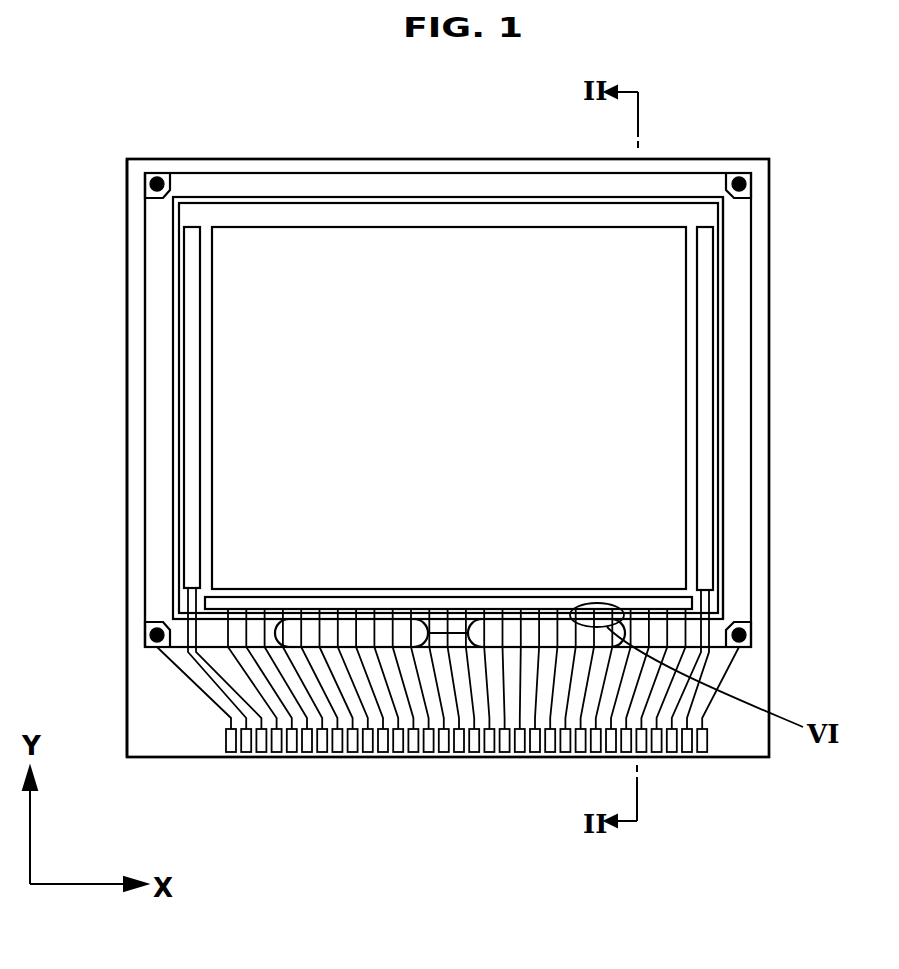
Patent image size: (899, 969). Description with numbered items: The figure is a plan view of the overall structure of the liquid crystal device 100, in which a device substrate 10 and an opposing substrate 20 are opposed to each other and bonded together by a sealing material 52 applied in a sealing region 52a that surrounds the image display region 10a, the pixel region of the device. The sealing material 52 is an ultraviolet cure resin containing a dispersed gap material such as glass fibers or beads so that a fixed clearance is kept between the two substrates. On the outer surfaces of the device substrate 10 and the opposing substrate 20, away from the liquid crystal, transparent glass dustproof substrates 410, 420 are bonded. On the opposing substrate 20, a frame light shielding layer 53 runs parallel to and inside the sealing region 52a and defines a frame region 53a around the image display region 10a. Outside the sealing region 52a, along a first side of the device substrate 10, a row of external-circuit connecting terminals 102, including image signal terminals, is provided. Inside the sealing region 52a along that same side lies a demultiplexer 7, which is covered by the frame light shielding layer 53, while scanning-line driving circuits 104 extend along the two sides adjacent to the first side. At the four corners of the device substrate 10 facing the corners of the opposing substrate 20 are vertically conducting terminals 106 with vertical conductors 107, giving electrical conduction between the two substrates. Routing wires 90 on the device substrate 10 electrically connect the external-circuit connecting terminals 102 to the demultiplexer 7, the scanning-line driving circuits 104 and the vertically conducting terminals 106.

The liquid crystal device 100 is at (786, 130).
The device substrate 10 is at (293, 168).
The opposing substrate 20 is at (472, 173).
The image display region 10a is at (250, 305).
The demultiplexer 7 is at (283, 603).
The sealing material 52 is at (741, 352).
The sealing region 52a is at (741, 307).
The frame light shielding layer 53 is at (713, 598).
The frame region 53a is at (710, 220).
The routing wires 90 is at (180, 677).
The external-circuit connecting terminals 102 is at (417, 752).
The scanning-line driving circuits 104 is at (712, 408).
The vertically conducting terminals 106 is at (713, 177).
The vertical conductors 107 is at (150, 633).
The dustproof substrate 410 is at (127, 360).
The dustproof substrate 420 is at (145, 412).